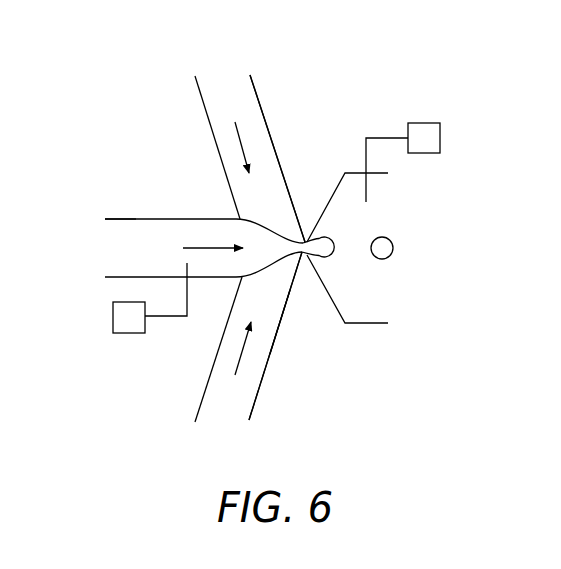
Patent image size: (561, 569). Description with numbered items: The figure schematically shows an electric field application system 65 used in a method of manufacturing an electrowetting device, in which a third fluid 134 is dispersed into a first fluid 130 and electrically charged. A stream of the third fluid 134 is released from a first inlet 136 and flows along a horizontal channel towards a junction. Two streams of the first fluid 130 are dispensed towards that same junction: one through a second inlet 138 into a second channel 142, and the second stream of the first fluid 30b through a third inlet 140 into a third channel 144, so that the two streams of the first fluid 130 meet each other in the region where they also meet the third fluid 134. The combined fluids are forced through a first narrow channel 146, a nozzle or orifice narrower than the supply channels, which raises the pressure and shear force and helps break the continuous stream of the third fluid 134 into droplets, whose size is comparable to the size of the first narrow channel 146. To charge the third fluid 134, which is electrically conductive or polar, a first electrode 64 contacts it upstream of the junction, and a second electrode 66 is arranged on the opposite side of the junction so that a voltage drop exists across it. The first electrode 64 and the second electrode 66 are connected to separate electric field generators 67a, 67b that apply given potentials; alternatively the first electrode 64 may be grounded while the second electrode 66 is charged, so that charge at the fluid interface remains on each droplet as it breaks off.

The electric field application system 65 is at (454, 70).
The second electrode 66 is at (387, 138).
The electric field generator 67a is at (113, 318).
The electric field generator 67b is at (440, 138).
The first electrode 64 is at (163, 318).
The third fluid 134 is at (393, 248).
The first inlet 136 is at (105, 231).
The second inlet 138 is at (225, 87).
The third inlet 140 is at (225, 410).
The second channel 142 is at (257, 95).
The third channel 144 is at (255, 400).
The first fluid 130 is at (268, 138).
The first narrow channel 146 is at (302, 235).
The second stream of the first fluid 30b is at (260, 352).